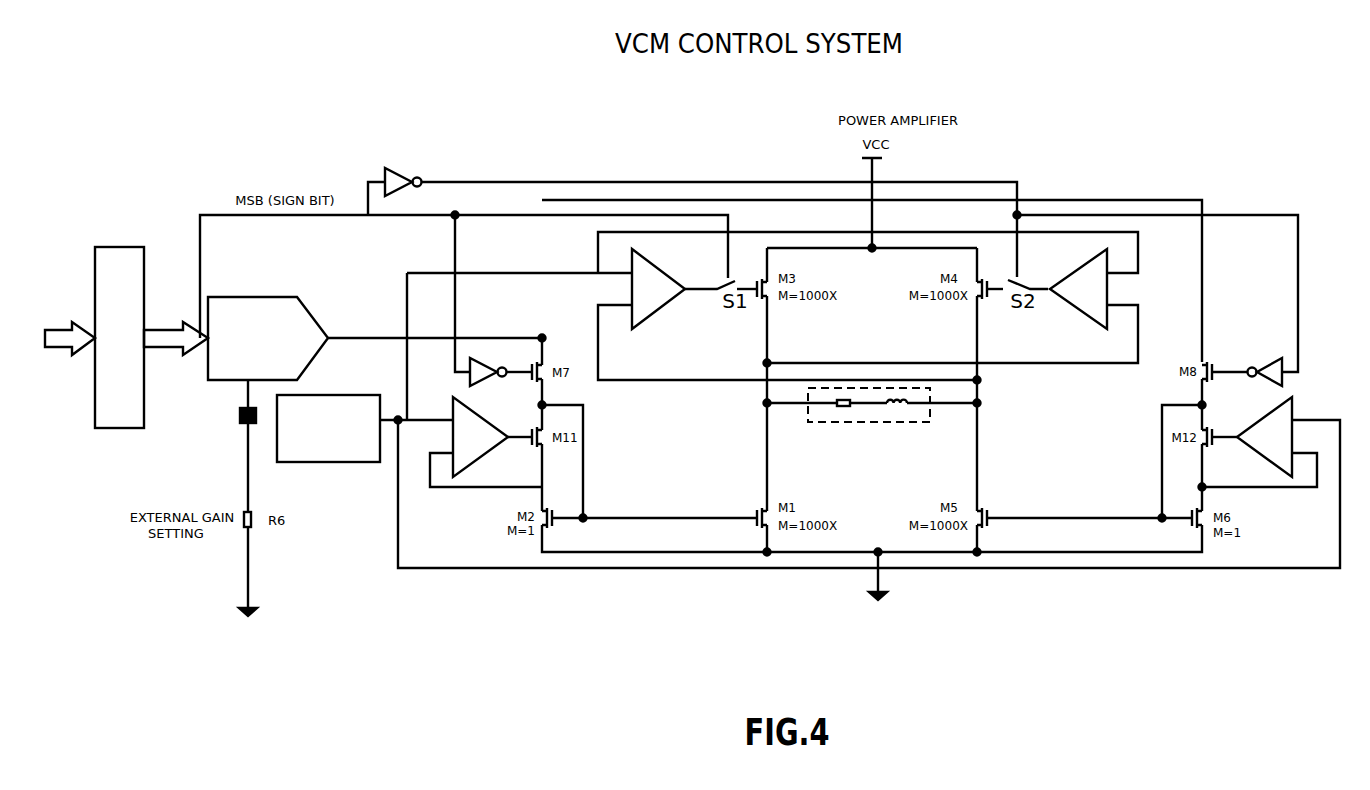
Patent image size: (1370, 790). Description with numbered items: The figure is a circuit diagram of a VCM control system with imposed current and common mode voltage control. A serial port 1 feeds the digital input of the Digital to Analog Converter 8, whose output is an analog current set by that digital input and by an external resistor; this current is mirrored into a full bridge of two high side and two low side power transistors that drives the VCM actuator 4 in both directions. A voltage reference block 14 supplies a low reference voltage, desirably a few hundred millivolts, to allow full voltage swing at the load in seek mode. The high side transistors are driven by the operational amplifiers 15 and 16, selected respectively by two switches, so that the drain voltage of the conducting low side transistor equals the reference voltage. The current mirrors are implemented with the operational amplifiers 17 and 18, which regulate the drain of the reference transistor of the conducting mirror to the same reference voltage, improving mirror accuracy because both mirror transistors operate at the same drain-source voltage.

The serial port 1 is at (145, 280).
The Digital to Analog Converter 8 is at (298, 298).
The voltage reference block 14 is at (333, 463).
The operational amplifier 15 is at (663, 307).
The operational amplifier 16 is at (1090, 250).
The operational amplifier 17 is at (487, 458).
The operational amplifier 18 is at (1295, 407).
The VCM actuator 4 is at (908, 424).